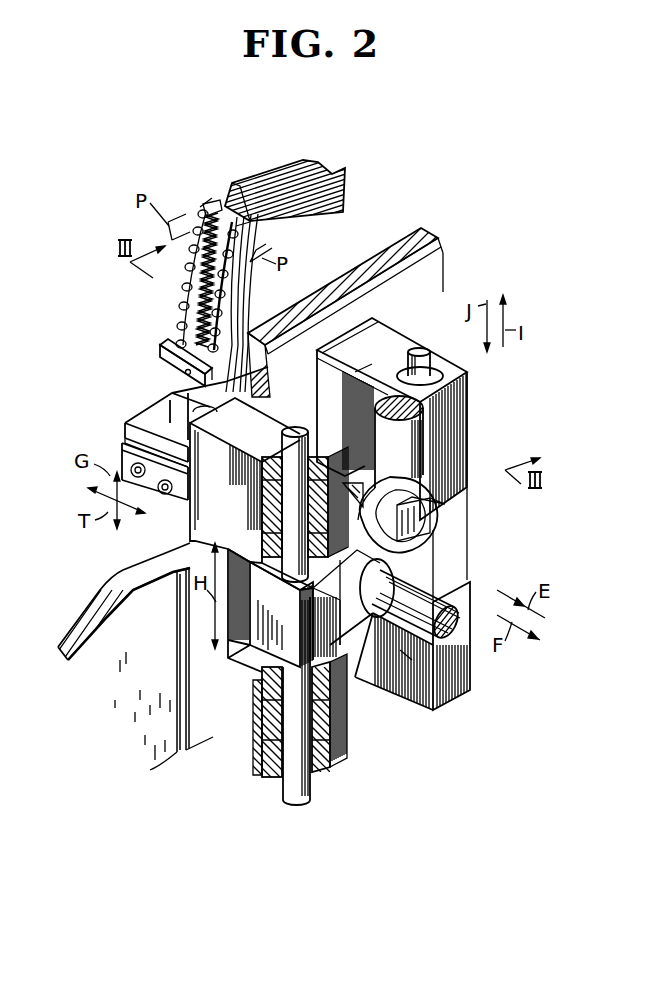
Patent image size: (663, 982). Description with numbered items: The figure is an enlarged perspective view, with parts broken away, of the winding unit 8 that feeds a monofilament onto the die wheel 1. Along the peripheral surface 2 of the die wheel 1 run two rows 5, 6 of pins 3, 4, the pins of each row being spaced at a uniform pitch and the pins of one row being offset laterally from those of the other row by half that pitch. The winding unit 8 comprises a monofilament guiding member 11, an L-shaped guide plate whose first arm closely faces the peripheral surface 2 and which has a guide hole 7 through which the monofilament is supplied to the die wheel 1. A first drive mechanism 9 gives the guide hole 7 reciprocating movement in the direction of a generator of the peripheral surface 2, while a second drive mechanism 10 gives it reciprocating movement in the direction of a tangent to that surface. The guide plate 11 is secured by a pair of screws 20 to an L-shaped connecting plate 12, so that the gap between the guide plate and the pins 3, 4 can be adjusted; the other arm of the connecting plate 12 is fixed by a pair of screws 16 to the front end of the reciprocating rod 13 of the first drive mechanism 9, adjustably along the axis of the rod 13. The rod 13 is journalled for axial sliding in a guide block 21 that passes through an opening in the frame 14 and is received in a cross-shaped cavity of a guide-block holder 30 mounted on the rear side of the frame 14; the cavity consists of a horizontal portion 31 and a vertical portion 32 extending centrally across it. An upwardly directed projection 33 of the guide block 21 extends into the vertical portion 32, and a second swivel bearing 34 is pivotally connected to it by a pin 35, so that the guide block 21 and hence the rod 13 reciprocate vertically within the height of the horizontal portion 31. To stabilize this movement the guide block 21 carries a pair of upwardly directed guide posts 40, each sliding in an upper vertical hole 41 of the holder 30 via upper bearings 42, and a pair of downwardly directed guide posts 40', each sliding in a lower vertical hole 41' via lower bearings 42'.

The die wheel 1 is at (347, 208).
The peripheral surface 2 is at (183, 316).
The pin 3 is at (207, 204).
The pin 4 is at (229, 273).
The row 5 is at (201, 212).
The row 6 is at (240, 228).
The guide hole 7 is at (160, 364).
The winding unit 8 is at (122, 417).
The first drive mechanism 9 is at (445, 584).
The second drive mechanism 10 is at (440, 436).
The monofilament guiding member 11 is at (160, 349).
The connecting plate 12 is at (166, 413).
The reciprocating rod 13 is at (405, 655).
The frame 14 is at (394, 262).
The screws 16 is at (150, 497).
The screws 20 is at (221, 418).
The guide block 21 is at (452, 521).
The guide-block holder 30 is at (470, 680).
The horizontal portion 31 is at (249, 666).
The vertical portion 32 is at (355, 372).
The projection 33 is at (362, 464).
The second swivel bearing 34 is at (393, 478).
The pin 35 is at (432, 521).
The guide posts 40 is at (323, 442).
The guide posts 40' is at (353, 707).
The upper vertical hole 41 is at (293, 502).
The lower vertical hole 41' is at (290, 715).
The upper bearings 42 is at (331, 489).
The lower bearings 42' is at (255, 749).